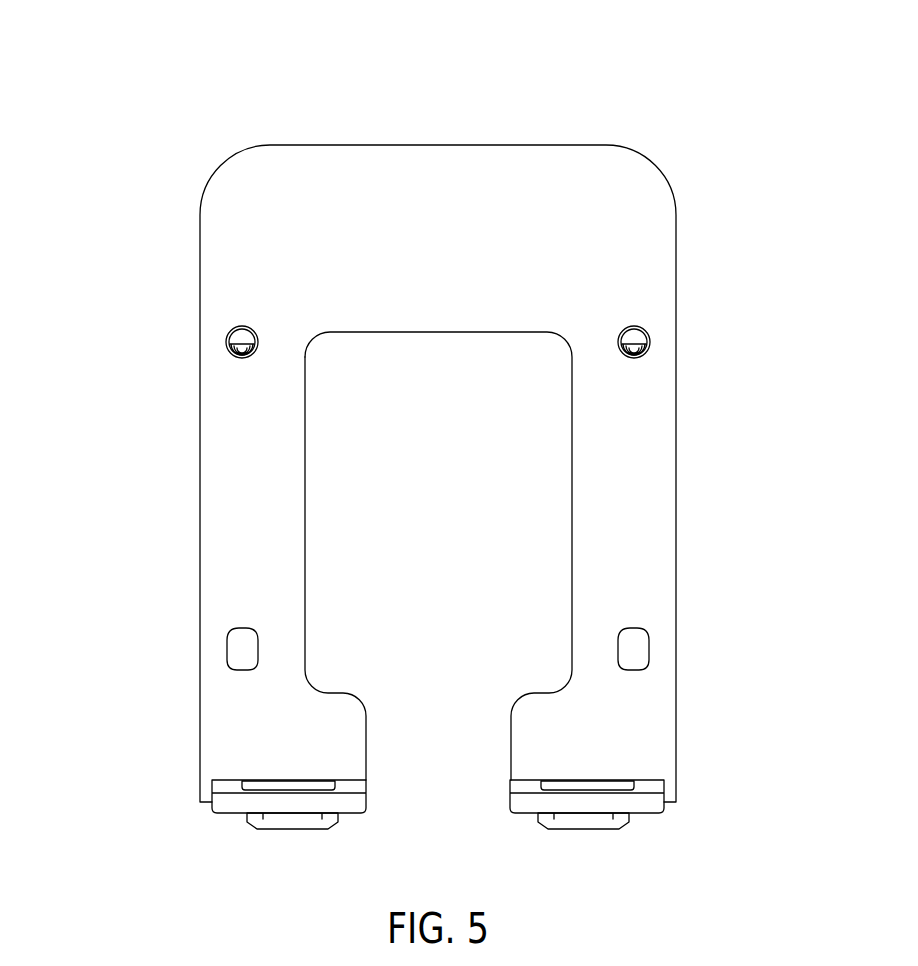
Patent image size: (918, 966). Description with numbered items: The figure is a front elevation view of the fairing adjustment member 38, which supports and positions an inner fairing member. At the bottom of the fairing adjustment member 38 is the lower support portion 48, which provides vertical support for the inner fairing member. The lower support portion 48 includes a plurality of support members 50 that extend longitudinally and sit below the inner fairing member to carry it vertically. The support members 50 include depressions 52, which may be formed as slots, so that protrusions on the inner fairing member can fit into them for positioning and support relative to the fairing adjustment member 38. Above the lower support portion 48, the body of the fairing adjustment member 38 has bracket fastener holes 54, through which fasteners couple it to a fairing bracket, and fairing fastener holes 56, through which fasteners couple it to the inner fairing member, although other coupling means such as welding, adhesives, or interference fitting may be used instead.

The fairing adjustment member 38 is at (697, 127).
The lower support portion 48 is at (700, 833).
The support members 50 is at (348, 808).
The depressions 52 is at (337, 786).
The bracket fastener holes 54 is at (240, 350).
The fairing fastener holes 56 is at (230, 347).